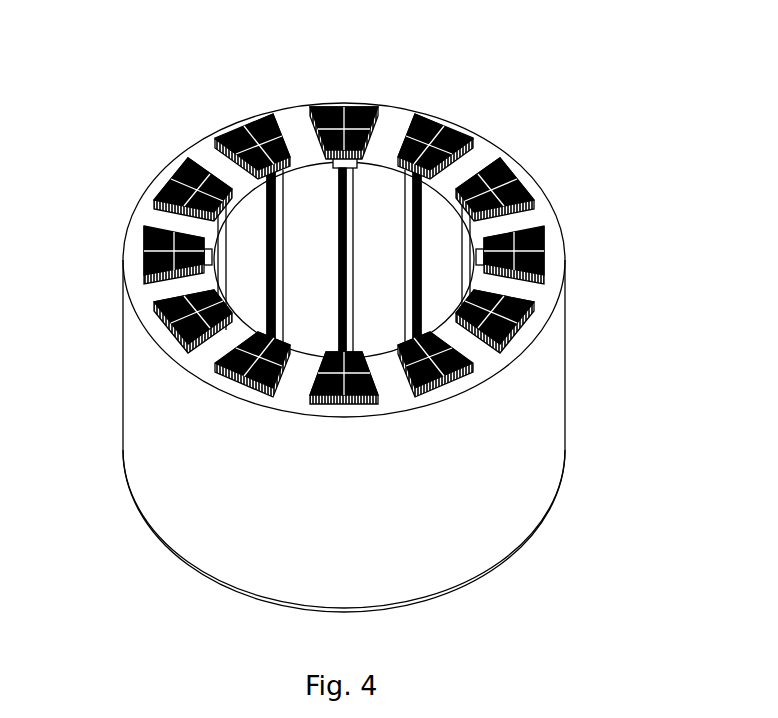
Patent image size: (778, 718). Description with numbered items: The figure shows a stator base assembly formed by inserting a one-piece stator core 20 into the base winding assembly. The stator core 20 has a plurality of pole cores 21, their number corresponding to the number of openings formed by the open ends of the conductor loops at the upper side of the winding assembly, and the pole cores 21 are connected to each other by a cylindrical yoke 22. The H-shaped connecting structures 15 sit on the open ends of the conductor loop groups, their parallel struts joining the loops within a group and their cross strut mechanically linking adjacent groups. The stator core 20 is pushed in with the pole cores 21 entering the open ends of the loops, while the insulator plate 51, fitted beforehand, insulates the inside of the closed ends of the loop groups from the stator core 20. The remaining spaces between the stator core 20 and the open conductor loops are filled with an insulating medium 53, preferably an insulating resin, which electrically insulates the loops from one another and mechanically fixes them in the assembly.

The connecting structure 15 is at (232, 130).
The stator core 20 is at (547, 367).
The pole core 21 is at (303, 133).
The cylindrical yoke 22 is at (147, 228).
The insulator plate 51 is at (203, 578).
The insulating medium 53 is at (544, 217).